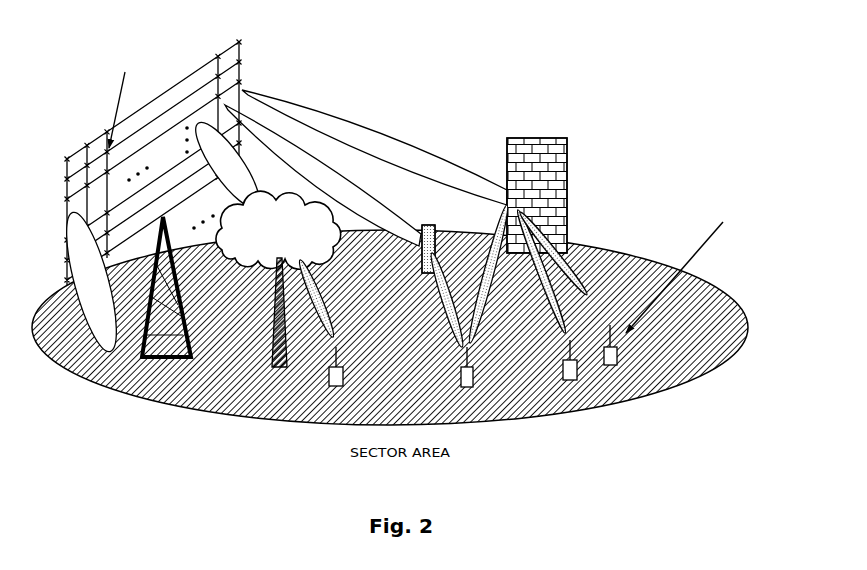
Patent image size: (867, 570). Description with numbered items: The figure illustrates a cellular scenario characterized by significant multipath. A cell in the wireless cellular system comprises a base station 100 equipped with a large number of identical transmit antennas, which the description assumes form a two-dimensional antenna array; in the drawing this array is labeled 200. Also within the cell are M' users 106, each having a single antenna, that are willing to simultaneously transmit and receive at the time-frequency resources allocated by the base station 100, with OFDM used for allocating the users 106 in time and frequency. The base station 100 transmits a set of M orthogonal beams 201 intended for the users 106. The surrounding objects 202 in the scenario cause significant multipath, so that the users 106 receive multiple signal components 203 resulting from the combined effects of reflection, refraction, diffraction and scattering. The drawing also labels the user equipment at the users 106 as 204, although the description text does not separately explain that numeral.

The base station 100 is at (160, 197).
The antenna array with N antenna elements 200 is at (142, 153).
The orthogonal beams 201 is at (366, 168).
The surrounding objects 202 is at (537, 186).
The multiple signal components 203 is at (442, 285).
The user equipment 204 is at (477, 363).
The users 106 is at (674, 284).